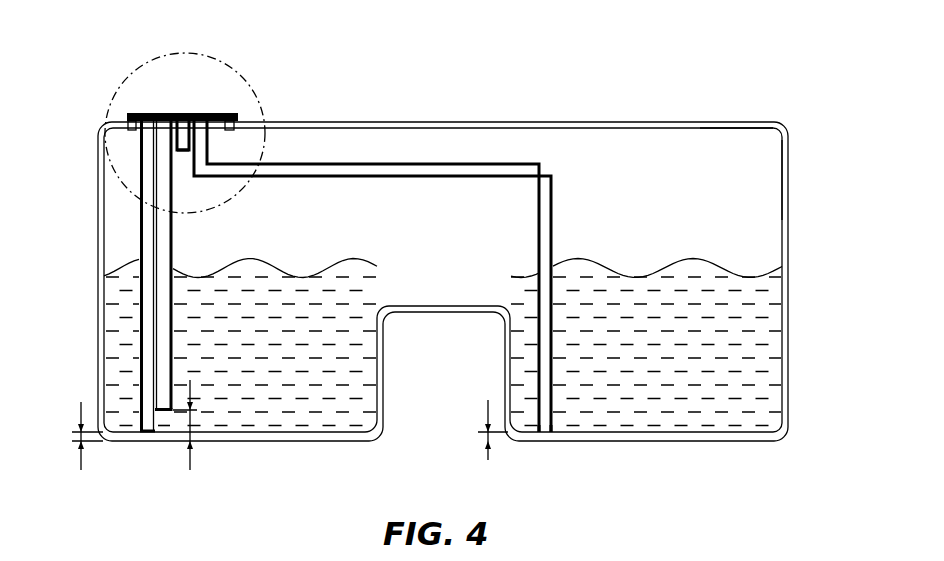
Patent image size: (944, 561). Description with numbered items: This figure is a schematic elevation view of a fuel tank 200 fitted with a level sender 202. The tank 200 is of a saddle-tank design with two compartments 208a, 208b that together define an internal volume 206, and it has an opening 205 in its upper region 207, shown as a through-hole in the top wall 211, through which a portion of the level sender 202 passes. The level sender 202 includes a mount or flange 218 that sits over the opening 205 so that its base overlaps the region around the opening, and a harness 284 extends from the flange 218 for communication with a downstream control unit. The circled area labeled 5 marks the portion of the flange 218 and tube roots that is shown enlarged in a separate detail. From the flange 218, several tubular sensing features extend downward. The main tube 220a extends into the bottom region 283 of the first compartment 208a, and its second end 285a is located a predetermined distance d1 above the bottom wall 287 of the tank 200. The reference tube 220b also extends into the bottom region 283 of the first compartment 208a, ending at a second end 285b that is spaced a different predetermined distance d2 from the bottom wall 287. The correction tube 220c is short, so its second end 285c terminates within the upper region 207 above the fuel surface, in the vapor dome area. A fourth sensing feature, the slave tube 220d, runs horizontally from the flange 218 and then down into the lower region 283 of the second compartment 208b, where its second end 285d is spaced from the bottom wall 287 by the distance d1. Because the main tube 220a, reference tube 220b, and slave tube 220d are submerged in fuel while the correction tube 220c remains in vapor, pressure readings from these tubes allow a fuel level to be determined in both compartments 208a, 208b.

The tank 200 is at (442, 273).
The level sender 202 is at (393, 300).
The opening 205 is at (237, 115).
The internal volume 206 is at (718, 158).
The upper region 207 is at (753, 155).
The first compartment 208a is at (125, 242).
The second compartment 208b is at (758, 248).
The top wall 211 is at (501, 128).
The flange 218 is at (166, 114).
The main tube 220a is at (104, 323).
The reference tube 220b is at (181, 305).
The correction tube 220c is at (214, 163).
The slave tube 220d is at (378, 177).
The bottom region 283 is at (322, 404).
The harness 284 is at (219, 113).
The second end of main tube 285a is at (142, 433).
The second end of reference tube 285b is at (168, 412).
The second end of correction tube 285c is at (182, 153).
The second end of slave tube 285d is at (548, 434).
The bottom wall 287 is at (313, 434).
The FIG. 5 detail region 5 is at (232, 70).
The predetermined distance d1 is at (290, 451).
The predetermined distance d2 is at (185, 441).